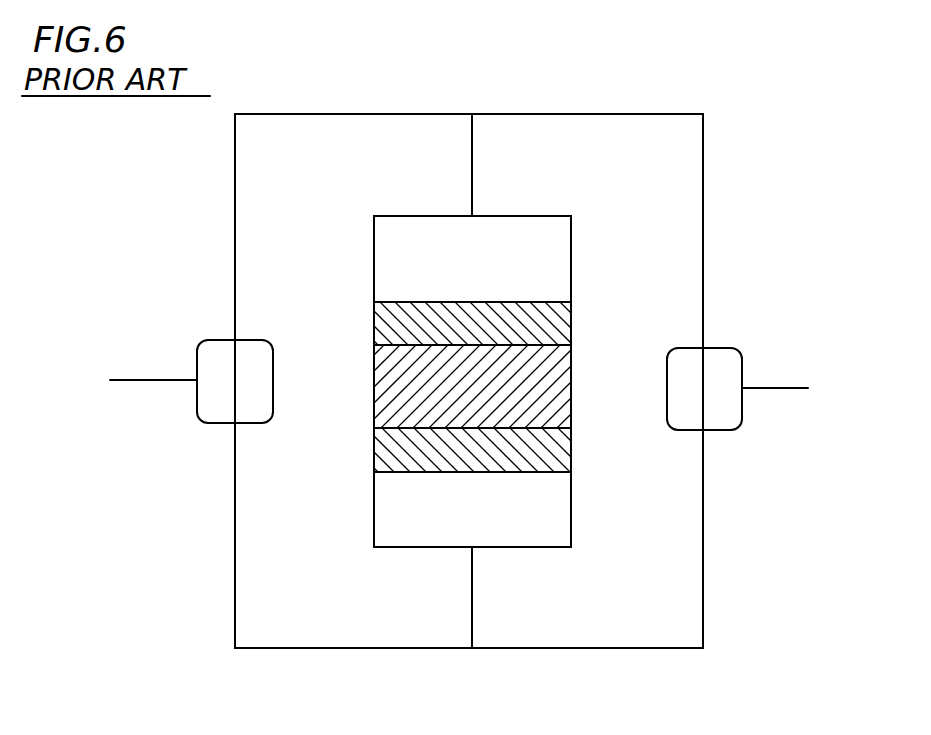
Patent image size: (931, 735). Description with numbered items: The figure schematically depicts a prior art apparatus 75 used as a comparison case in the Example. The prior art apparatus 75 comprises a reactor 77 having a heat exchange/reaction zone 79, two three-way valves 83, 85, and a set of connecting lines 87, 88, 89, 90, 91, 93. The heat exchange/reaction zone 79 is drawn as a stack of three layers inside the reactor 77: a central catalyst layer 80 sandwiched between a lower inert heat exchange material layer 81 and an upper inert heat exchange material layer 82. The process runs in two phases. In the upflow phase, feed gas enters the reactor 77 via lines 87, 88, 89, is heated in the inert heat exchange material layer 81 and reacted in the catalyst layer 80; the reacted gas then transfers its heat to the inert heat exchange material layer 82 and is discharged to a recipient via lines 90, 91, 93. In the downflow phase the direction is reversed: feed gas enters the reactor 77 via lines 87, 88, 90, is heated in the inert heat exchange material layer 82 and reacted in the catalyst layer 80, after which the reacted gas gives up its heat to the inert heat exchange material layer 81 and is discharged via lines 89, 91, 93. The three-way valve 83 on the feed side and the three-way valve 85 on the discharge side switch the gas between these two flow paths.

The prior art apparatus 75 is at (208, 240).
The reactor 77 is at (571, 242).
The heat exchange/reaction zone 79 is at (374, 302).
The catalyst layer 80 is at (548, 392).
The inert heat exchange material layer 81 is at (548, 458).
The inert heat exchange material layer 82 is at (548, 326).
The three-way valve 83 is at (264, 340).
The three-way valve 85 is at (742, 352).
The line 87 is at (147, 380).
The line 88 is at (235, 516).
The line 89 is at (472, 612).
The line 90 is at (472, 185).
The line 91 is at (703, 245).
The line 93 is at (795, 389).